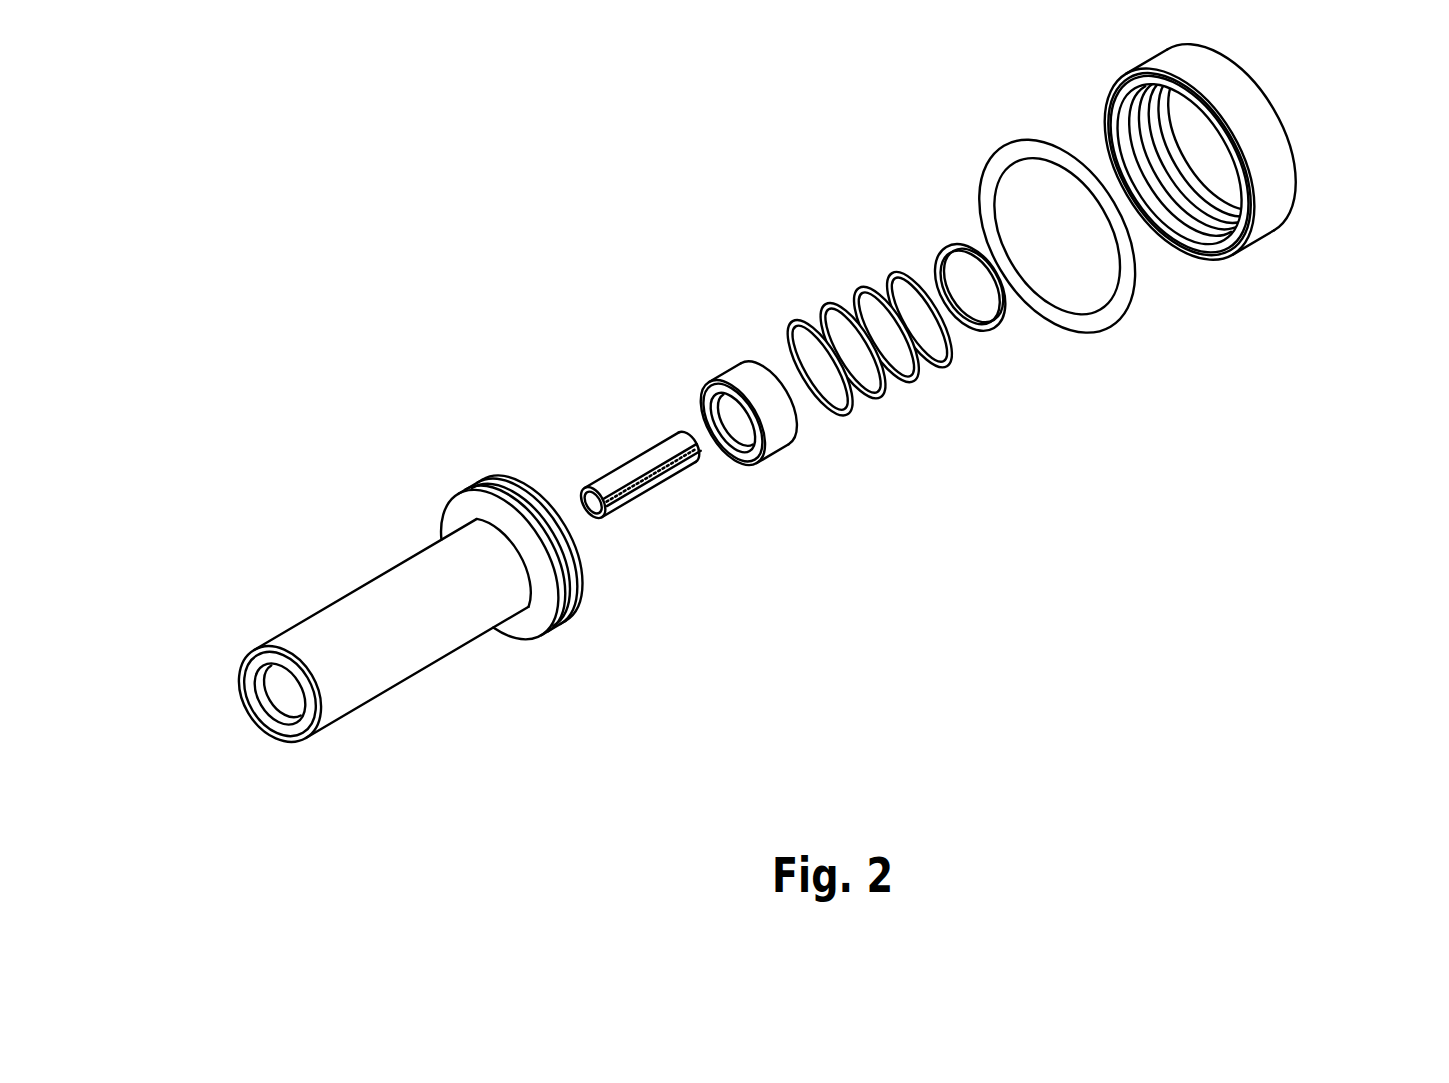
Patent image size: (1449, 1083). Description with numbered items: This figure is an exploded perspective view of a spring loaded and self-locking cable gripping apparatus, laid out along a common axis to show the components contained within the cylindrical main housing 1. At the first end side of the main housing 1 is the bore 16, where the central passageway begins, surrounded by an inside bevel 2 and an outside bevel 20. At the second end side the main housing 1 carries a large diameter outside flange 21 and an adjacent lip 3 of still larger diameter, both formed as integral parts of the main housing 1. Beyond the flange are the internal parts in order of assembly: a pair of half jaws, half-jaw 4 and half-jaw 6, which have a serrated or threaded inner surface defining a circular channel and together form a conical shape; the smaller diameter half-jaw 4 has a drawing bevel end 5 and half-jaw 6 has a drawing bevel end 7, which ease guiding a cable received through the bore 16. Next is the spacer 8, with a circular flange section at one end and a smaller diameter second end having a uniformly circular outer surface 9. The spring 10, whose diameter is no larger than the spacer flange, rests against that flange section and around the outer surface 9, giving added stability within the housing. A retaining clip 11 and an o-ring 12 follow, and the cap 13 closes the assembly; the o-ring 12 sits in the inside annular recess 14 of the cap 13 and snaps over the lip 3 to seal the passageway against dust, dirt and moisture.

The main housing 1 is at (370, 601).
The inside bevel 2 is at (280, 718).
The lip 3 is at (507, 477).
The half-jaw 4 is at (622, 467).
The drawing bevel end 5 is at (580, 493).
The half-jaw 6 is at (640, 503).
The drawing bevel end 7 is at (603, 525).
The spacer 8 is at (767, 415).
The outer surface 9 is at (767, 378).
The spring 10 is at (833, 322).
The retaining clip 11 is at (1000, 323).
The o-ring 12 is at (1117, 302).
The cap 13 is at (1270, 150).
The inside annular recess 14 is at (1173, 223).
The bore 16 is at (263, 693).
The outside bevel 20 is at (273, 655).
The outside flange 21 is at (463, 477).